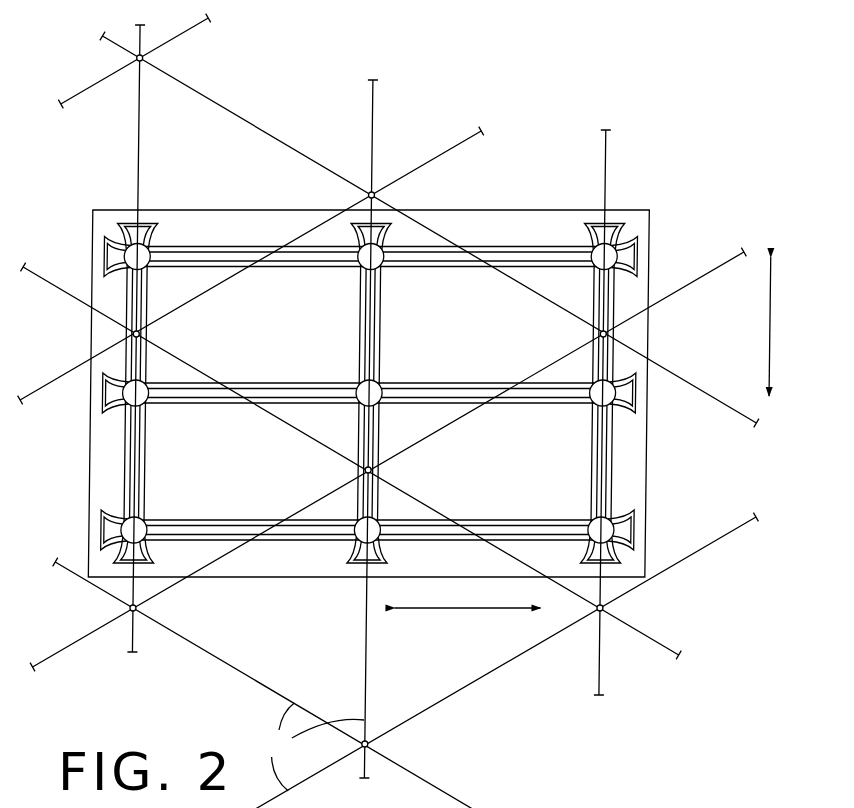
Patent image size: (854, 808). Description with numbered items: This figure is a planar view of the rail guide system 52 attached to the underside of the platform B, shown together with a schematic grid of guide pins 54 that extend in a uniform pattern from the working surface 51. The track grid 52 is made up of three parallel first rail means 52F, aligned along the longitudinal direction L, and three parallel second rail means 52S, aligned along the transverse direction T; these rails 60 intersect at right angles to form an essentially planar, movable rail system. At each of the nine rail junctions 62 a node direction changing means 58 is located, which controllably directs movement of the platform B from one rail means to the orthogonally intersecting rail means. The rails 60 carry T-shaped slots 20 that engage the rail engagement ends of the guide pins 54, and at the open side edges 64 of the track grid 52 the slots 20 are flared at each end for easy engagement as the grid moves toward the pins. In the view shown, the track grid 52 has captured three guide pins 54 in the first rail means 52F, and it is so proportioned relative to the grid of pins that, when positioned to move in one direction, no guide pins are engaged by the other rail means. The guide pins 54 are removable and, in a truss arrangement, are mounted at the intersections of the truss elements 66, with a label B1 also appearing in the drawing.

The T-shaped slot 20 is at (110, 255).
The working surface 51 is at (255, 124).
The rail guide system 52 is at (318, 543).
The first rail means 52F is at (148, 301).
The second rail means 52S is at (369, 388).
The guide pin 54 is at (131, 58).
The node direction changing means 58 is at (647, 246).
The rail 60 is at (466, 385).
The rail junction 62 is at (147, 244).
The open side edge 64 is at (110, 272).
The truss element 66 is at (312, 747).
The platform B is at (274, 580).
The upper boundary B1 is at (286, 207).
The longitudinal direction L is at (755, 326).
The transverse direction T is at (467, 624).